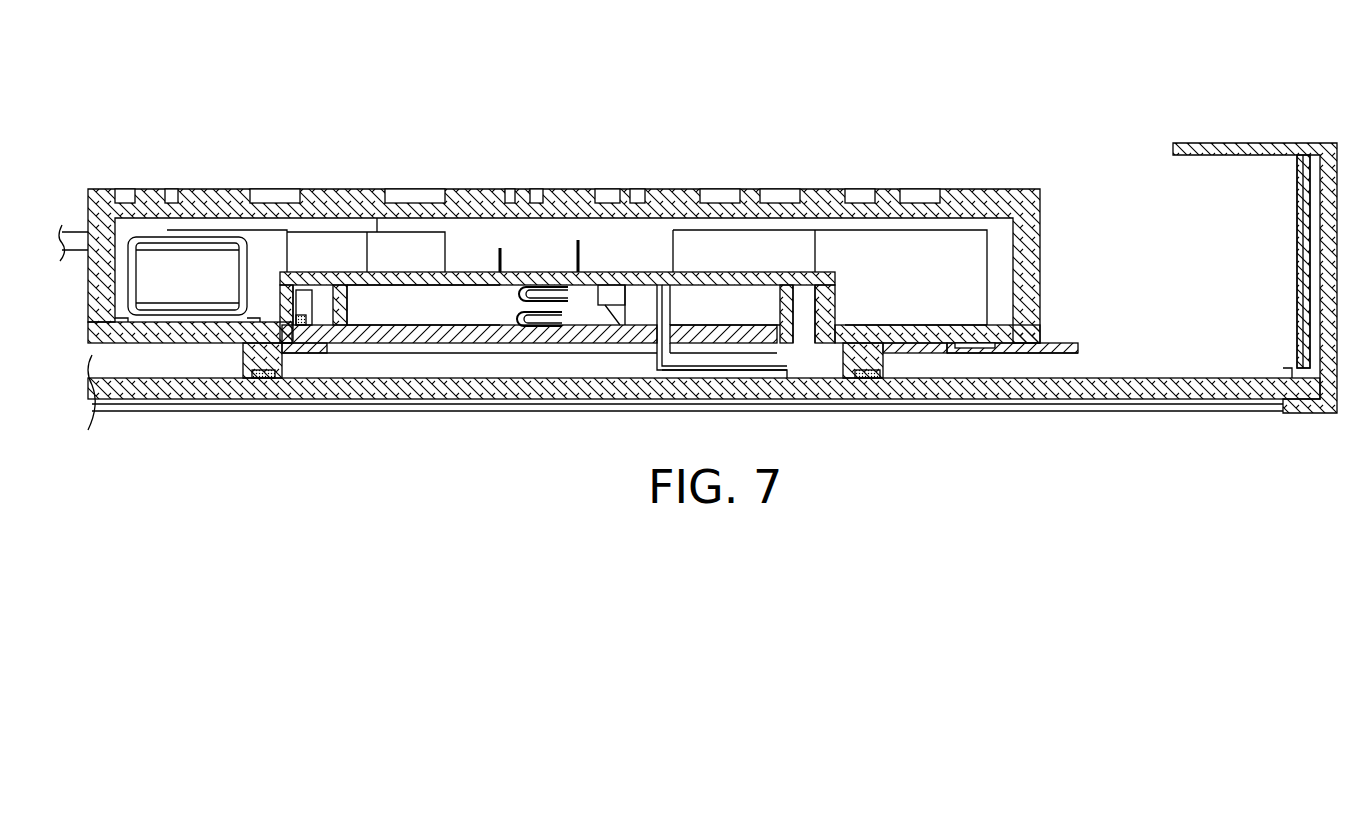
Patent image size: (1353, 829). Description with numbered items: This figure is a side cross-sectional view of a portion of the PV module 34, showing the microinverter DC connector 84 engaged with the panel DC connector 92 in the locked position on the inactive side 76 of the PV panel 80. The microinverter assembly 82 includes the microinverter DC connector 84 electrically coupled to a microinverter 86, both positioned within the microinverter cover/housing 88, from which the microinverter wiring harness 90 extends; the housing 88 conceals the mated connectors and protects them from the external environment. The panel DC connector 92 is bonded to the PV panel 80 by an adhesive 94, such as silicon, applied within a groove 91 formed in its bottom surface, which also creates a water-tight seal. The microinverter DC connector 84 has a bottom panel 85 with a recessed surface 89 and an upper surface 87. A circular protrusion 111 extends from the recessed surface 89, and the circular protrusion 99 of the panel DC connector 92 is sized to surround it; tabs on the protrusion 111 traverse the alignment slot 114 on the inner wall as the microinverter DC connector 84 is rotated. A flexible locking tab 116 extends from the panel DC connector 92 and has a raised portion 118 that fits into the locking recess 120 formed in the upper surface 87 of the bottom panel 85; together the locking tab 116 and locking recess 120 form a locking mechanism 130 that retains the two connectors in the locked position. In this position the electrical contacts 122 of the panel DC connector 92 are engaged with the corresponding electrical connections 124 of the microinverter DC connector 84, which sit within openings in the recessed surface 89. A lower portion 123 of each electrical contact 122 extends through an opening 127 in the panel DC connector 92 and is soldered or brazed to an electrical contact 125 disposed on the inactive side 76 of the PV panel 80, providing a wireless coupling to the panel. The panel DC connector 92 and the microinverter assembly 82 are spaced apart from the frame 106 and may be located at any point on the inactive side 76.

The PV module 34 is at (604, 78).
The inactive side 76 is at (1156, 378).
The PV panel 80 is at (1156, 412).
The microinverter assembly 82 is at (1104, 224).
The microinverter DC connector 84 is at (479, 255).
The bottom panel 85 is at (190, 330).
The microinverter 86 is at (920, 262).
The upper surface 87 is at (133, 345).
The microinverter cover/housing 88 is at (205, 190).
The recessed surface 89 is at (397, 284).
The microinverter wiring harness 90 is at (75, 235).
The groove 91 is at (265, 380).
The panel DC connector 92 is at (240, 350).
The adhesive 94 is at (272, 378).
The circular protrusion 99 is at (824, 300).
The frame 106 is at (1250, 145).
The circular protrusion 111 is at (788, 290).
The alignment slot 114 is at (805, 318).
The locking tab 116 is at (1076, 348).
The raised portion 118 is at (973, 348).
The locking recess 120 is at (1018, 326).
The electrical contacts 122 is at (543, 326).
The lower portion 123 is at (693, 375).
The electrical connections 124 is at (518, 292).
The electrical contact 125 is at (724, 388).
The opening 127 is at (652, 378).
The locking mechanism 130 is at (986, 368).